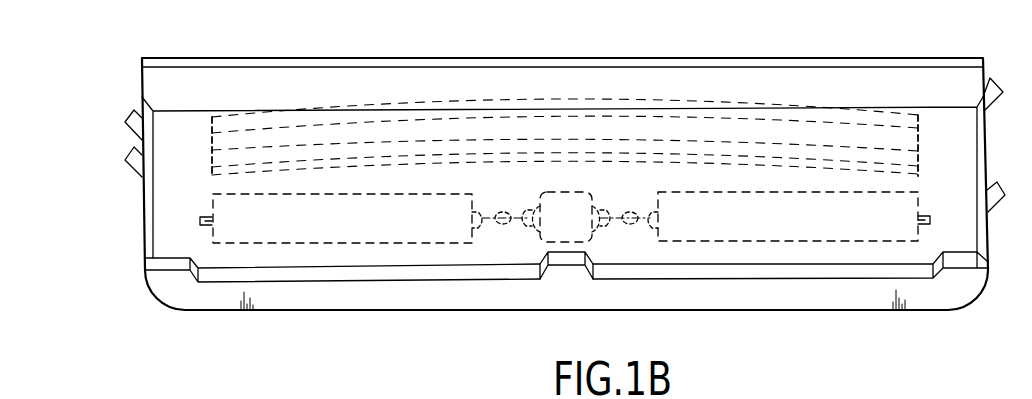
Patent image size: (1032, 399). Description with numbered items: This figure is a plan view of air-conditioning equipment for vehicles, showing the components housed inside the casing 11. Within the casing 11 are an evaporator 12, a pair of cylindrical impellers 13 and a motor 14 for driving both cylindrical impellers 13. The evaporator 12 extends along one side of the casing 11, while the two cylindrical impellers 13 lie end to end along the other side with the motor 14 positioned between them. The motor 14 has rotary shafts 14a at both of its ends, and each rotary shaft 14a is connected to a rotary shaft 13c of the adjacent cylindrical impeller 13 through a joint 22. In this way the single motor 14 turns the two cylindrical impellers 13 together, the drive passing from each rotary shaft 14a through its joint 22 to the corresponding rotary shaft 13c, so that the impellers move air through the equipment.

The casing 11 is at (902, 76).
The evaporator 12 is at (680, 100).
The cylindrical impeller 13 is at (868, 325).
The rotary shaft 13c is at (742, 324).
The motor 14 is at (588, 242).
The rotary shaft 14a is at (655, 324).
The joint 22 is at (695, 324).